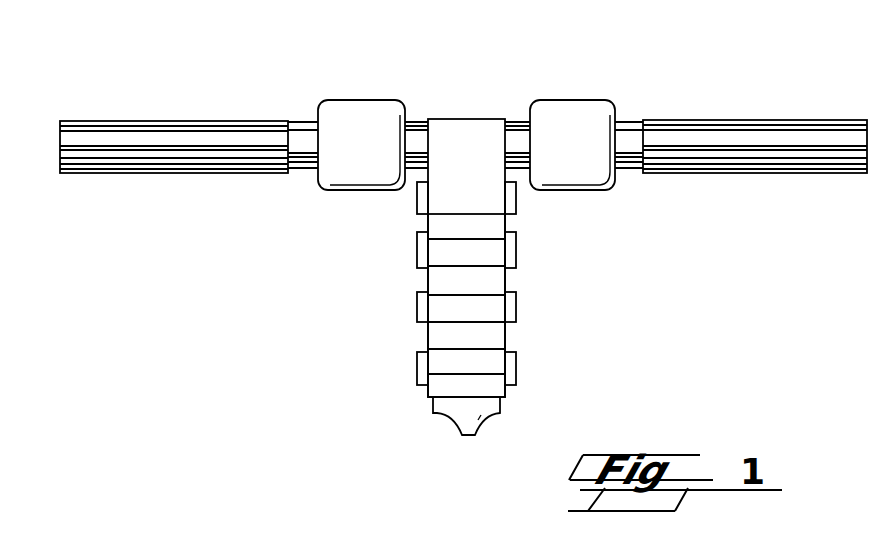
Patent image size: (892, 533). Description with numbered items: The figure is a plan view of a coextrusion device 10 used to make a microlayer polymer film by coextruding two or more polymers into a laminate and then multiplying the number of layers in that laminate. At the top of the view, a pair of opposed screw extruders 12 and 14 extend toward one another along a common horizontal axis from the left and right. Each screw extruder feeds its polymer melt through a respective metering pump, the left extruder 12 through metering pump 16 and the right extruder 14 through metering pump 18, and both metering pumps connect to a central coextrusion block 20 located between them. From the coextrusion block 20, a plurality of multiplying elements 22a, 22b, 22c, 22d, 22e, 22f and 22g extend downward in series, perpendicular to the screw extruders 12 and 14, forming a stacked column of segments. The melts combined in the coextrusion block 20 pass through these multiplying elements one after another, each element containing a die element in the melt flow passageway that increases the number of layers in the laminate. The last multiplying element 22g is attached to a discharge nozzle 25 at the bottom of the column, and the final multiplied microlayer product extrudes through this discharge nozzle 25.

The coextrusion device 10 is at (455, 58).
The screw extruder 12 is at (168, 121).
The screw extruder 14 is at (735, 120).
The metering pump 16 is at (352, 100).
The metering pump 18 is at (572, 100).
The coextrusion block 20 is at (480, 178).
The multiplying element 22a is at (495, 228).
The multiplying element 22b is at (498, 258).
The multiplying element 22c is at (435, 280).
The multiplying element 22d is at (492, 308).
The multiplying element 22e is at (427, 340).
The multiplying element 22f is at (497, 360).
The multiplying element 22g is at (442, 383).
The discharge nozzle 25 is at (445, 418).